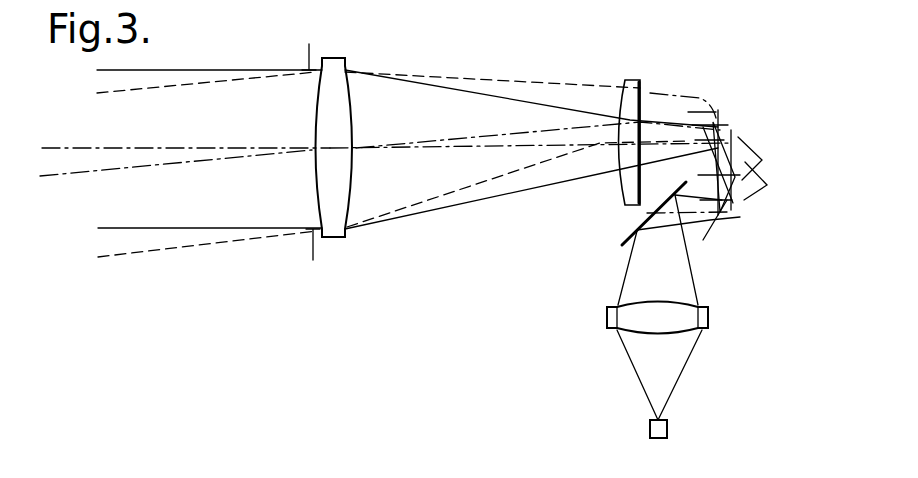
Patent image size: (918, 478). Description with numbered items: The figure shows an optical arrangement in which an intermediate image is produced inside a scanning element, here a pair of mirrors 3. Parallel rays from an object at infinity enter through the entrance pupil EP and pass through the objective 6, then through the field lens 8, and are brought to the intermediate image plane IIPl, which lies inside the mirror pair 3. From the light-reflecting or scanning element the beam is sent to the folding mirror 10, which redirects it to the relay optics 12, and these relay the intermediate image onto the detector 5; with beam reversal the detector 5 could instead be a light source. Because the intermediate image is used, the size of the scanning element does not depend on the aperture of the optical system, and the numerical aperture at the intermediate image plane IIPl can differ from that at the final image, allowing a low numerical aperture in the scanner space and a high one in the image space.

The objective 6 is at (322, 115).
The field lens 8 is at (632, 103).
The folding mirror 10 is at (640, 222).
The relay optics 12 is at (607, 320).
The detector 5 is at (668, 428).
The pair of mirrors 3 is at (752, 190).
The entrance pupil EP is at (304, 137).
The intermediate image plane IIPl is at (740, 197).